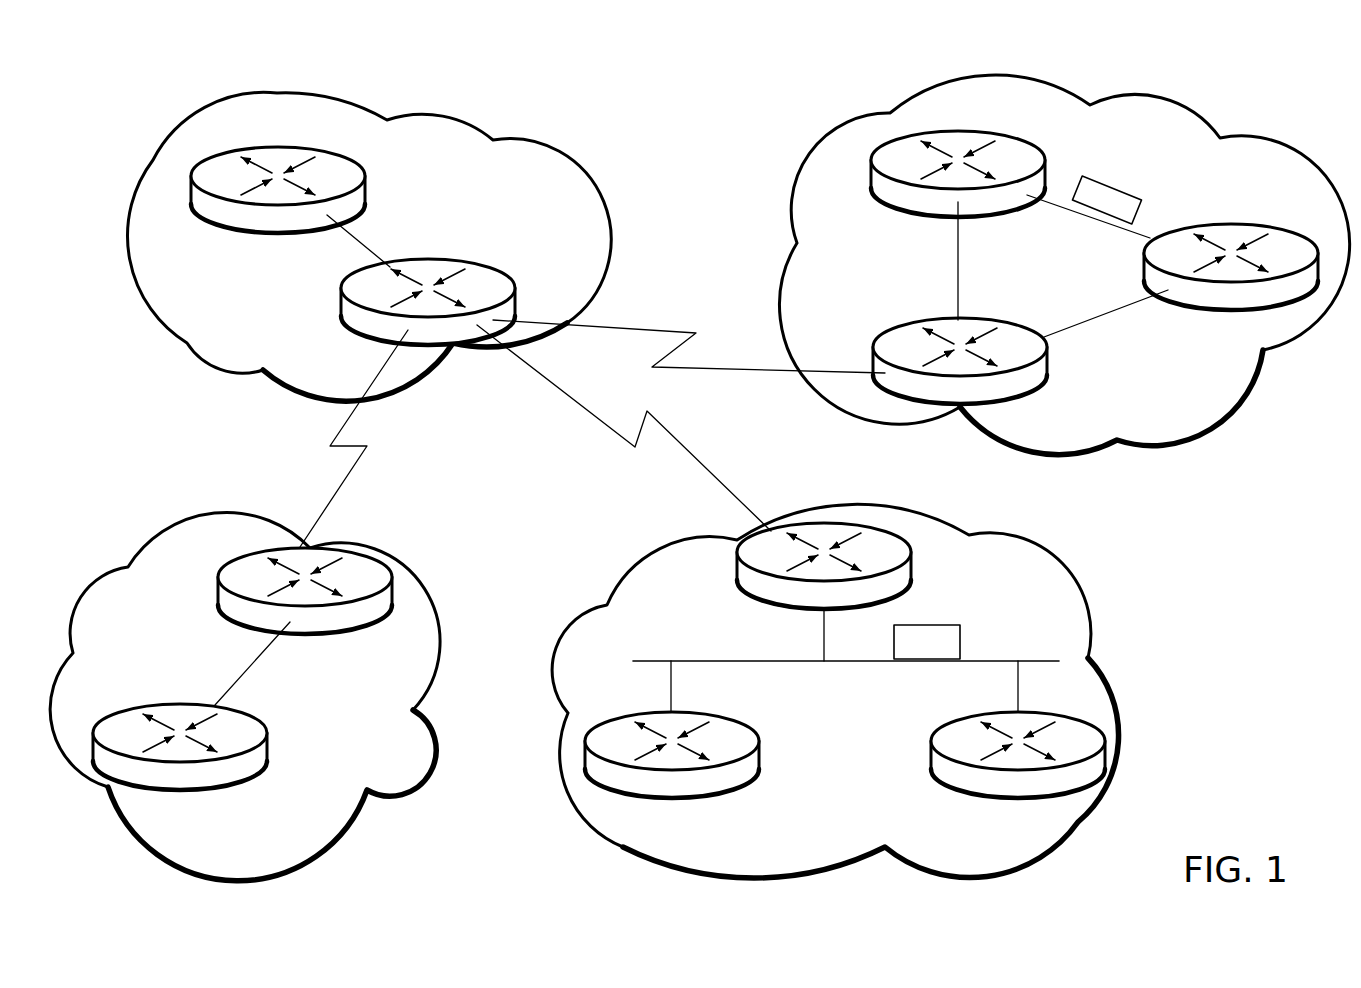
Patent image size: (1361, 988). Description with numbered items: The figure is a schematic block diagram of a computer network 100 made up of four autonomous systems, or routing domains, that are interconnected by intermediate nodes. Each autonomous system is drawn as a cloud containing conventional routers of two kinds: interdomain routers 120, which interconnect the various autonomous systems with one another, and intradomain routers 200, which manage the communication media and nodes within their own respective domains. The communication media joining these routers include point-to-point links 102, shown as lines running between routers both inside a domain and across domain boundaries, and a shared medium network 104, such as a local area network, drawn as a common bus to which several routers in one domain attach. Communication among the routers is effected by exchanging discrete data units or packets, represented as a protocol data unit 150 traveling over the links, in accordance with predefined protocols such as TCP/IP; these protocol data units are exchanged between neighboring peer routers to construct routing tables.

The computer network 100 is at (116, 163).
The point-to-point links 102 is at (365, 240).
The shared medium networks 104 is at (848, 664).
The interdomain routers 120 is at (499, 271).
The protocol data unit 150 is at (1134, 190).
The intradomain routers 200 is at (269, 149).